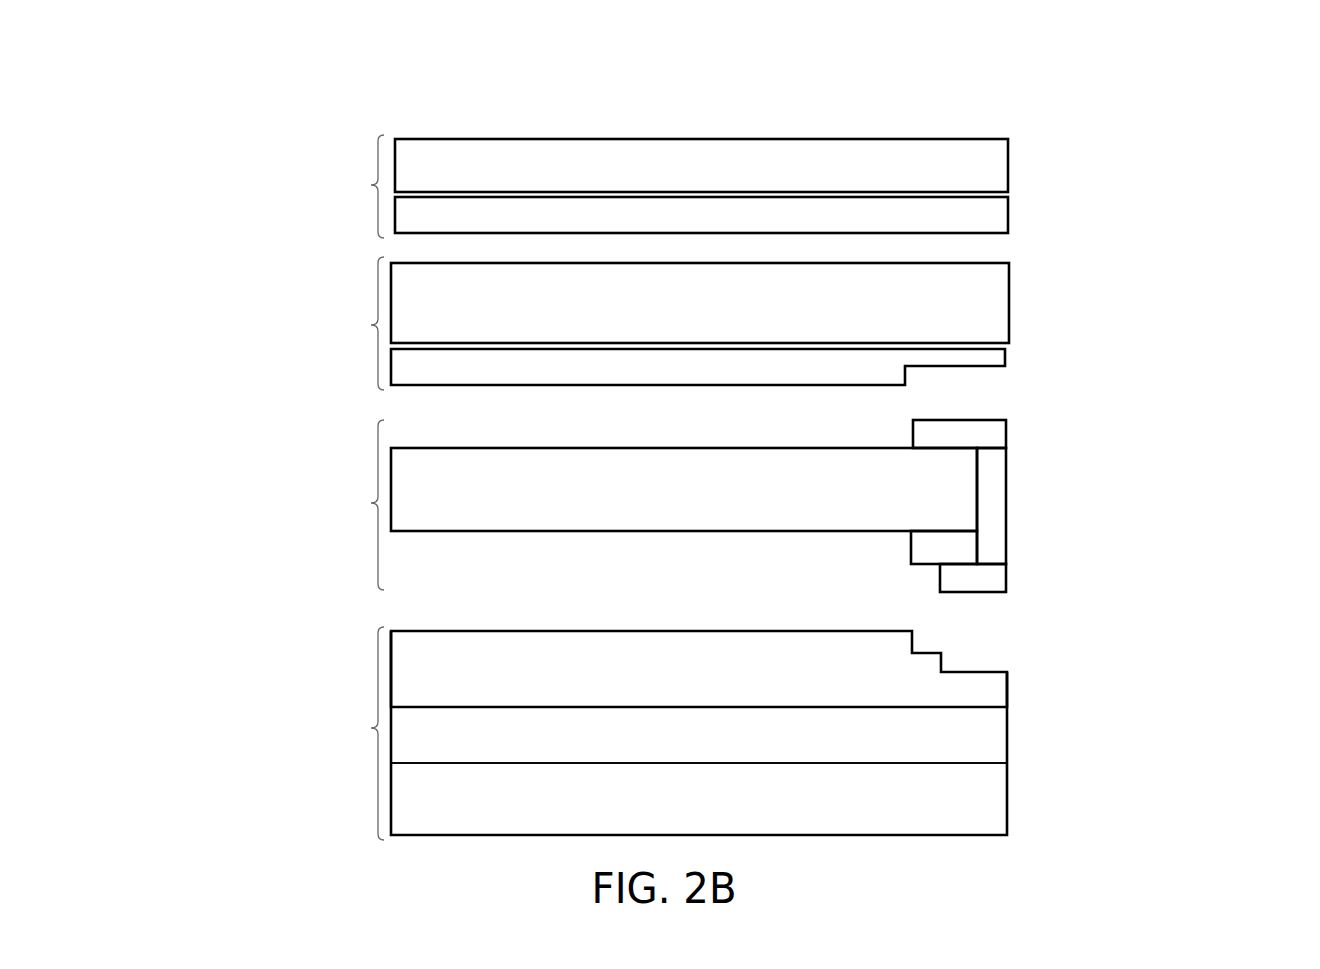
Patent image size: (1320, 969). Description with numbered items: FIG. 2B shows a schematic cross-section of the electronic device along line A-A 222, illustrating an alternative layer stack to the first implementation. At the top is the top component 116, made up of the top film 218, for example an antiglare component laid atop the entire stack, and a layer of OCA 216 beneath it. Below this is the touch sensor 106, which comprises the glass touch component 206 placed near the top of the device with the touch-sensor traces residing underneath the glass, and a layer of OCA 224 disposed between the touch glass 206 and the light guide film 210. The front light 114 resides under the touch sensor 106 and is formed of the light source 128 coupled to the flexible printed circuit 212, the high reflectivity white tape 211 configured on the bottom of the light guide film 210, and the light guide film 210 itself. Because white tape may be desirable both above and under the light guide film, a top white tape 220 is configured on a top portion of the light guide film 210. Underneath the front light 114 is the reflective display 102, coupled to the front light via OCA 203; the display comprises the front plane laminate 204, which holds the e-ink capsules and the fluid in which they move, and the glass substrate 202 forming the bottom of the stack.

The electronic device along A-A 222 is at (731, 119).
The top component 116 is at (580, 186).
The top film 218 is at (701, 165).
The OCA 216 is at (701, 215).
The touch sensor 106 is at (582, 323).
The glass touch component 206 is at (700, 303).
The OCA 224 is at (698, 367).
The front light 114 is at (697, 514).
The light guide film 210 is at (684, 489).
The top white tape 220 is at (987, 426).
The light source 128 is at (994, 494).
The high reflectivity white tape 211 is at (948, 546).
The flexible printed circuit 212 is at (976, 580).
The reflective display 102 is at (593, 733).
The OCA 203 is at (699, 669).
The front plane laminate 204 is at (699, 735).
The glass substrate 202 is at (699, 799).